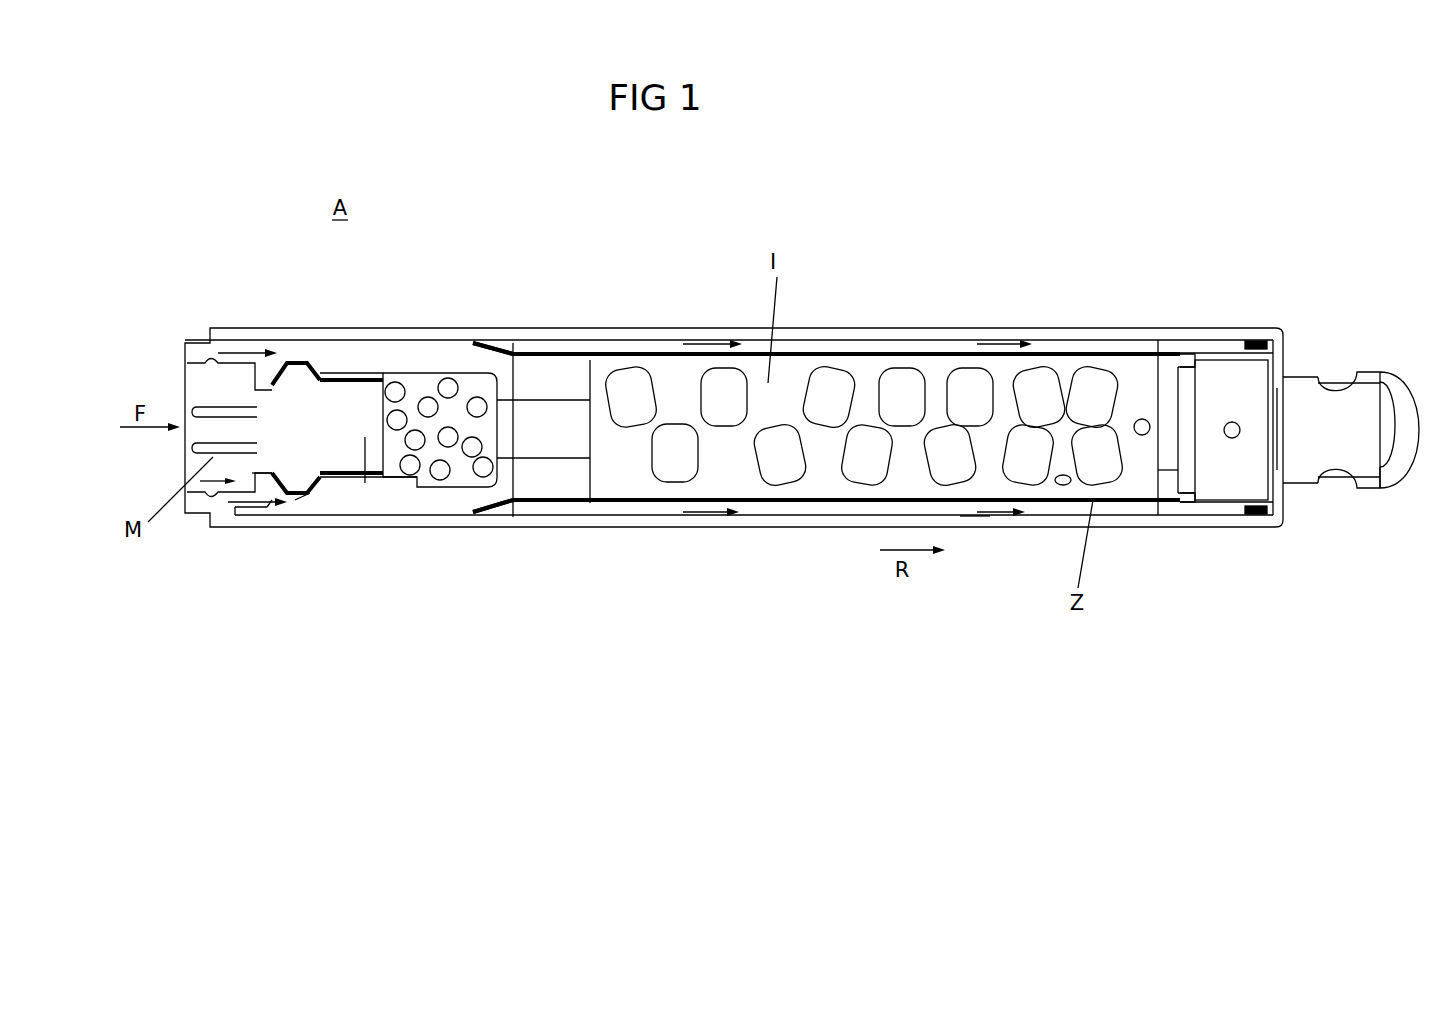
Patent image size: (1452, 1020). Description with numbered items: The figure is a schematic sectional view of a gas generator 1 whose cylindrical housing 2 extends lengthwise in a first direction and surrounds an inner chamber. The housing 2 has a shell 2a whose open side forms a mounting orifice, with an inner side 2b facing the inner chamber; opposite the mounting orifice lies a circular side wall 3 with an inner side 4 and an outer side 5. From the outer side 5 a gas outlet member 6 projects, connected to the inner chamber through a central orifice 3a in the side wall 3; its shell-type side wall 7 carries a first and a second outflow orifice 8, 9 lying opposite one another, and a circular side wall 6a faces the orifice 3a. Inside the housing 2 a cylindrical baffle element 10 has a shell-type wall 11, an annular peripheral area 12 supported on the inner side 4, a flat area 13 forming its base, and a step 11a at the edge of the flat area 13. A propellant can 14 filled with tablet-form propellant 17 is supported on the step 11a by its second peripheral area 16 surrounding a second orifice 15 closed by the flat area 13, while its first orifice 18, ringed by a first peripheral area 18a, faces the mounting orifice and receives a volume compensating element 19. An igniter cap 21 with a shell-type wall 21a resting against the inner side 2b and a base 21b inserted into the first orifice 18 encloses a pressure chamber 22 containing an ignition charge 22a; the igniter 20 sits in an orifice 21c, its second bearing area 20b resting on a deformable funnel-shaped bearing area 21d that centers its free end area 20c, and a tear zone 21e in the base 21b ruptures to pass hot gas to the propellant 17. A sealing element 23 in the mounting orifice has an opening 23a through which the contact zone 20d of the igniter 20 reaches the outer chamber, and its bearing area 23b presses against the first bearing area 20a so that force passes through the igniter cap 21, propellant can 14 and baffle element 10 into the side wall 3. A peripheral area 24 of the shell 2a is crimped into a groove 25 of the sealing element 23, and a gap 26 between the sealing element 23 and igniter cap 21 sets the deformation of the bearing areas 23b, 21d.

The gas generator 1 is at (1259, 575).
The housing 2 is at (865, 340).
The shell 2a is at (1043, 512).
The inner side 2b is at (977, 517).
The side wall 3 is at (1288, 503).
The orifice 3a is at (1292, 433).
The inner side 4 is at (1273, 362).
The outer side 5 is at (1289, 338).
The gas outlet member 6 is at (1363, 410).
The circular side wall 6a is at (1402, 428).
The side wall 7 is at (1336, 485).
The first outflow orifice 8 is at (1372, 485).
The second outflow orifice 9 is at (1335, 377).
The baffle element 10 is at (1222, 505).
The shell-type wall 11 is at (1220, 357).
The step 11a is at (1177, 352).
The annular peripheral area 12 is at (1281, 333).
The flat area 13 is at (1160, 470).
The propellant can 14 is at (818, 350).
The second orifice 15 is at (1170, 412).
The second peripheral area 16 is at (1184, 354).
The tablet-form propellant 17 is at (674, 460).
The first orifice 18 is at (509, 345).
The first peripheral area 18a is at (508, 352).
The volume compensating element 19 is at (553, 478).
The igniter 20 is at (337, 450).
The first bearing area 20a is at (273, 512).
The second bearing area 20b is at (300, 512).
The free end area 20c is at (365, 485).
The contact zone 20d is at (186, 464).
The igniter cap 21 is at (1139, 420).
The shell-type wall 21a is at (333, 352).
The base 21b is at (503, 490).
The orifice 21c is at (305, 410).
The bearing area 21d is at (318, 487).
The tear zone 21e is at (548, 352).
The pressure chamber 22 is at (462, 485).
The ignition charge 22a is at (449, 380).
The sealing element 23 is at (185, 346).
The opening 23a is at (270, 428).
The bearing area 23b is at (257, 345).
The peripheral area 24 is at (250, 520).
The groove 25 is at (232, 518).
The gap 26 is at (302, 360).